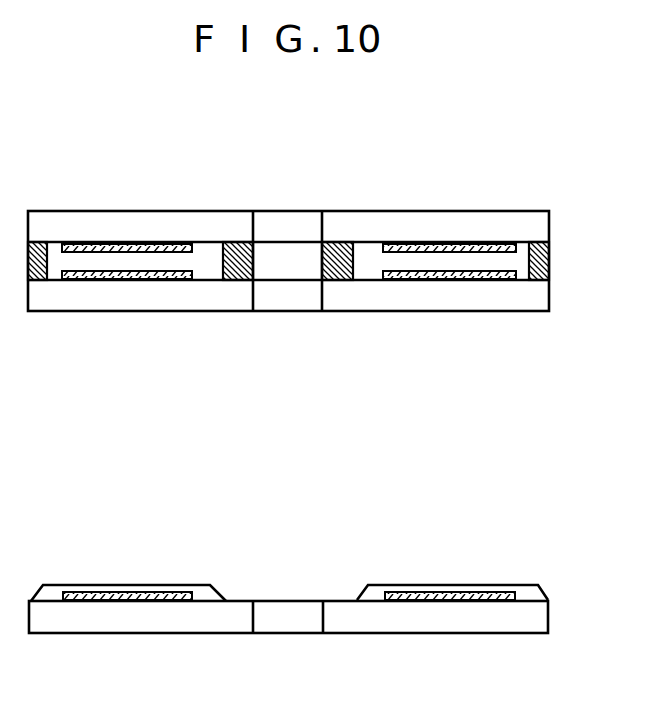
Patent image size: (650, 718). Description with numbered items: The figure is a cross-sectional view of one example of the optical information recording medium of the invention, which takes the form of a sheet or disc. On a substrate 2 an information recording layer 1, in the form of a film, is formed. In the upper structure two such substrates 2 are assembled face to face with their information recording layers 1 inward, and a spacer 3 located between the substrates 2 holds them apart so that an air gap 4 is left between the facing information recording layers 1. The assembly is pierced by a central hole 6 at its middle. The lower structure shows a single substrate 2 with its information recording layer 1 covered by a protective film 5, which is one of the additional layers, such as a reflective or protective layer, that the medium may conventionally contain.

The information recording layer 1 is at (427, 244).
The substrate 2 is at (549, 223).
The spacer 3 is at (549, 262).
The air gap 4 is at (519, 265).
The protective film 5 is at (543, 597).
The central hole 6 is at (306, 211).